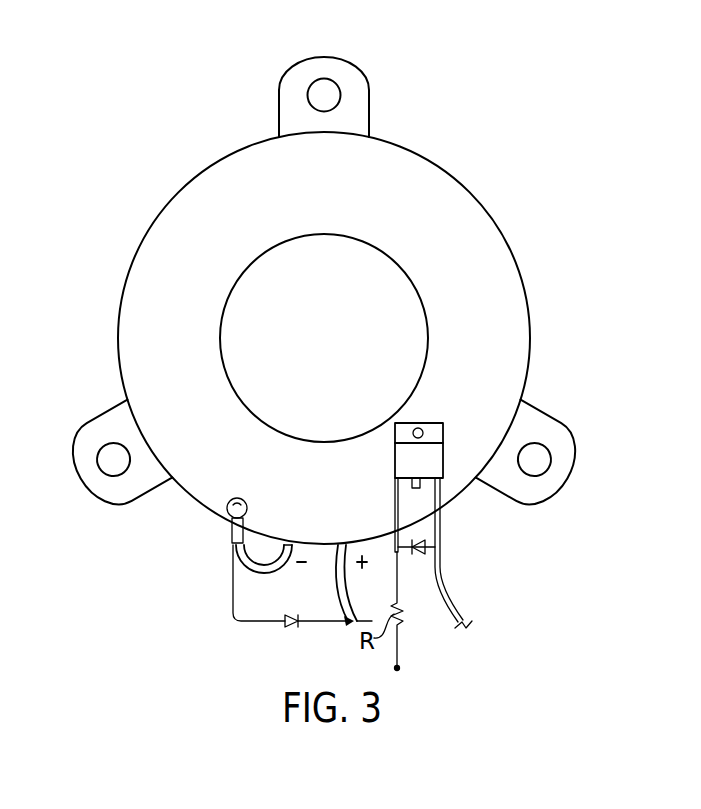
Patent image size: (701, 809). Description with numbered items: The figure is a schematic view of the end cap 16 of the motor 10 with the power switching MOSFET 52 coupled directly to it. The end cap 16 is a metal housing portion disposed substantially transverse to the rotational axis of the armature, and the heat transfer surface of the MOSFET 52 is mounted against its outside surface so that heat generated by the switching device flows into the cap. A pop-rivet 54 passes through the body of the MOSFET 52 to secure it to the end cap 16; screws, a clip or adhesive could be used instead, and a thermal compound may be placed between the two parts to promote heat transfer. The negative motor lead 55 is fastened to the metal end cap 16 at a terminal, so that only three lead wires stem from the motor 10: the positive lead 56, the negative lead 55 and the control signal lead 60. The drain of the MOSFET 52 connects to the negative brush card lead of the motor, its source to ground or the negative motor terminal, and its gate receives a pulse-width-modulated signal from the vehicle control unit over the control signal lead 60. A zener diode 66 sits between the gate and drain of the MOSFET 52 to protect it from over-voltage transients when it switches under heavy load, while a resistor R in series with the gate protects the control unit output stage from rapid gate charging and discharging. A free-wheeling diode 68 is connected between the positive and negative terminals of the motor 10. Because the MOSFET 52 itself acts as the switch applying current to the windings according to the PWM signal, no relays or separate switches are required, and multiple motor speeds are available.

The motor 10 is at (572, 329).
The end cap 16 is at (493, 241).
The MOSFET 52 is at (443, 432).
The pop-rivet 54 is at (418, 428).
The negative motor lead 55 is at (252, 545).
The positive lead 56 is at (352, 600).
The control signal lead 60 is at (398, 650).
The zener diode 66 is at (420, 555).
The free-wheeling diode 68 is at (290, 627).